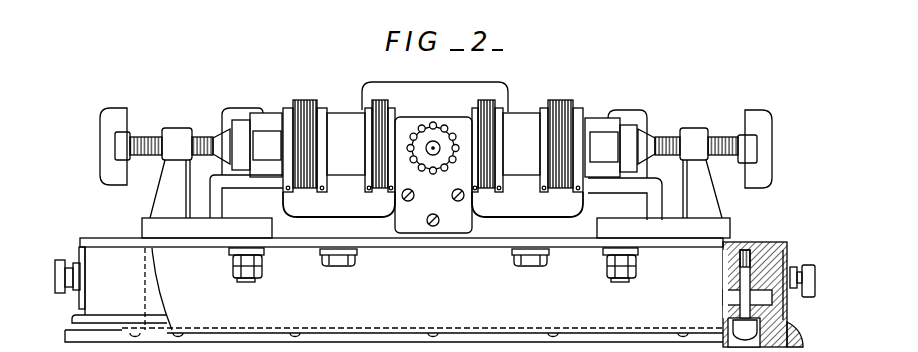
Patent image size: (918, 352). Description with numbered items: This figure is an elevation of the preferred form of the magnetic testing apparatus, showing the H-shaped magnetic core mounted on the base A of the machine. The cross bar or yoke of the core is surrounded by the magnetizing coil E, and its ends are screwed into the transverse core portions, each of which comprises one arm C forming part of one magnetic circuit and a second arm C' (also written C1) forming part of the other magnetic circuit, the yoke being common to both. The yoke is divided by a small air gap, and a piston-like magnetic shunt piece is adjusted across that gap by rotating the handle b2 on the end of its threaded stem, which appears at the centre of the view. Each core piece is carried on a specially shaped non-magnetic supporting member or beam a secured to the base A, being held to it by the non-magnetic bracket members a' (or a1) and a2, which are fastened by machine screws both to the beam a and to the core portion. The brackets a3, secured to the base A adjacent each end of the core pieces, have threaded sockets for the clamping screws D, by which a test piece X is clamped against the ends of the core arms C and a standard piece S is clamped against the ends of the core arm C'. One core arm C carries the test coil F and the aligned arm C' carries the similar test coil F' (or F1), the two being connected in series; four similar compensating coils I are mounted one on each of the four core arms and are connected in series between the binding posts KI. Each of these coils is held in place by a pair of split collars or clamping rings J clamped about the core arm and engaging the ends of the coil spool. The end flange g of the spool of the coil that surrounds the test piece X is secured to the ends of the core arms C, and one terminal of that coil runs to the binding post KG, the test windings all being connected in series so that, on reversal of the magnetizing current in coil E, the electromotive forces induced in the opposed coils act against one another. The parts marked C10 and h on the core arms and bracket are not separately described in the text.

The base A is at (434, 292).
The supporting member a is at (527, 213).
The bracket member a' is at (433, 175).
The bracket member a1 is at (433, 175).
The bracket member a2 is at (248, 187).
The bracket a3 is at (436, 183).
The handle b2 is at (433, 124).
The core arm C is at (604, 116).
The core arm C' is at (266, 122).
The core arm C1 is at (273, 116).
The collar insert C10 is at (435, 146).
The clamping screw D is at (145, 132).
The magnetizing coil E is at (462, 89).
The test coil F is at (497, 146).
The test coil F' is at (367, 146).
The test coil F1 is at (372, 134).
The end flange g is at (634, 110).
The bracket h is at (240, 107).
The compensating coil I is at (305, 103).
The split collar J is at (329, 110).
The binding post KG is at (56, 262).
The binding post KI is at (800, 267).
The standard piece S is at (231, 145).
The test piece X is at (637, 148).